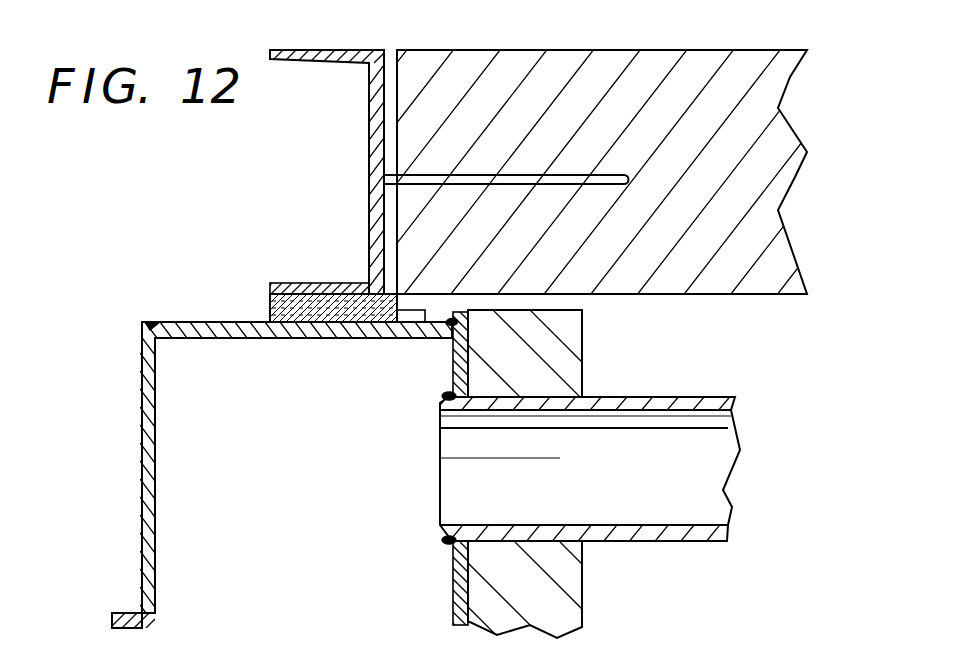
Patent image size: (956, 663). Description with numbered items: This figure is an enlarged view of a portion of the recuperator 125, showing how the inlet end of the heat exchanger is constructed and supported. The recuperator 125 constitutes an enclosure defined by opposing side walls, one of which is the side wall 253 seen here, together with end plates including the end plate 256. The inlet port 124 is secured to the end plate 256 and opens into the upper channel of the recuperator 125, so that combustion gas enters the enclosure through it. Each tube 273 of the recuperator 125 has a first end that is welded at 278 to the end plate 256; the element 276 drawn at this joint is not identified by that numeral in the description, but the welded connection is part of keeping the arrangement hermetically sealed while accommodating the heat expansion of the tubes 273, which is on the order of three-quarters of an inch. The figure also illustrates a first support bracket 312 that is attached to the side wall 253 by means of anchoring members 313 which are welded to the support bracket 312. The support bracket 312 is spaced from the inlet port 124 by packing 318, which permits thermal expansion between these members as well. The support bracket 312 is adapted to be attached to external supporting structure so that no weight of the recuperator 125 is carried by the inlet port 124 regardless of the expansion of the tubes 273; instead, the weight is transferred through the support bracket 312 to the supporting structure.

The first support bracket 312 is at (335, 50).
The side wall 253 is at (547, 78).
The anchoring members 313 is at (588, 186).
The packing 318 is at (268, 303).
The inlet port 124 is at (305, 588).
The end plate 256 is at (453, 356).
The fitting block 276 is at (490, 400).
The tube 273 is at (682, 401).
The weld 278 is at (447, 393).
The recuperator 125 is at (296, 223).